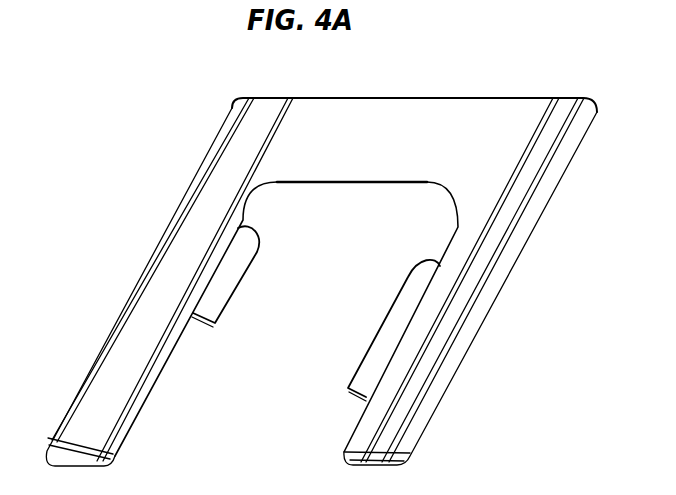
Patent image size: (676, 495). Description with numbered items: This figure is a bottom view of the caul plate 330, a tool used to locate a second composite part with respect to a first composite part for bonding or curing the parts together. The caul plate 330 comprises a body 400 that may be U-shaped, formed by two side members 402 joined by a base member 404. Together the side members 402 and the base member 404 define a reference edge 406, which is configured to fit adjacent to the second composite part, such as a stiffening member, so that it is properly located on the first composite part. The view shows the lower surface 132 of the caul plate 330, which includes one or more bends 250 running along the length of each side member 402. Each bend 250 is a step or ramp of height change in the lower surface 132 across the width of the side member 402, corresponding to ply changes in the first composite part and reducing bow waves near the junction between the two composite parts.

The caul plate 330 is at (128, 86).
The body 400 is at (309, 86).
The lower surface 132 is at (397, 108).
The base member 404 is at (501, 108).
The side member 402 is at (123, 303).
The bend 250 is at (217, 230).
The reference edge 406 is at (343, 184).